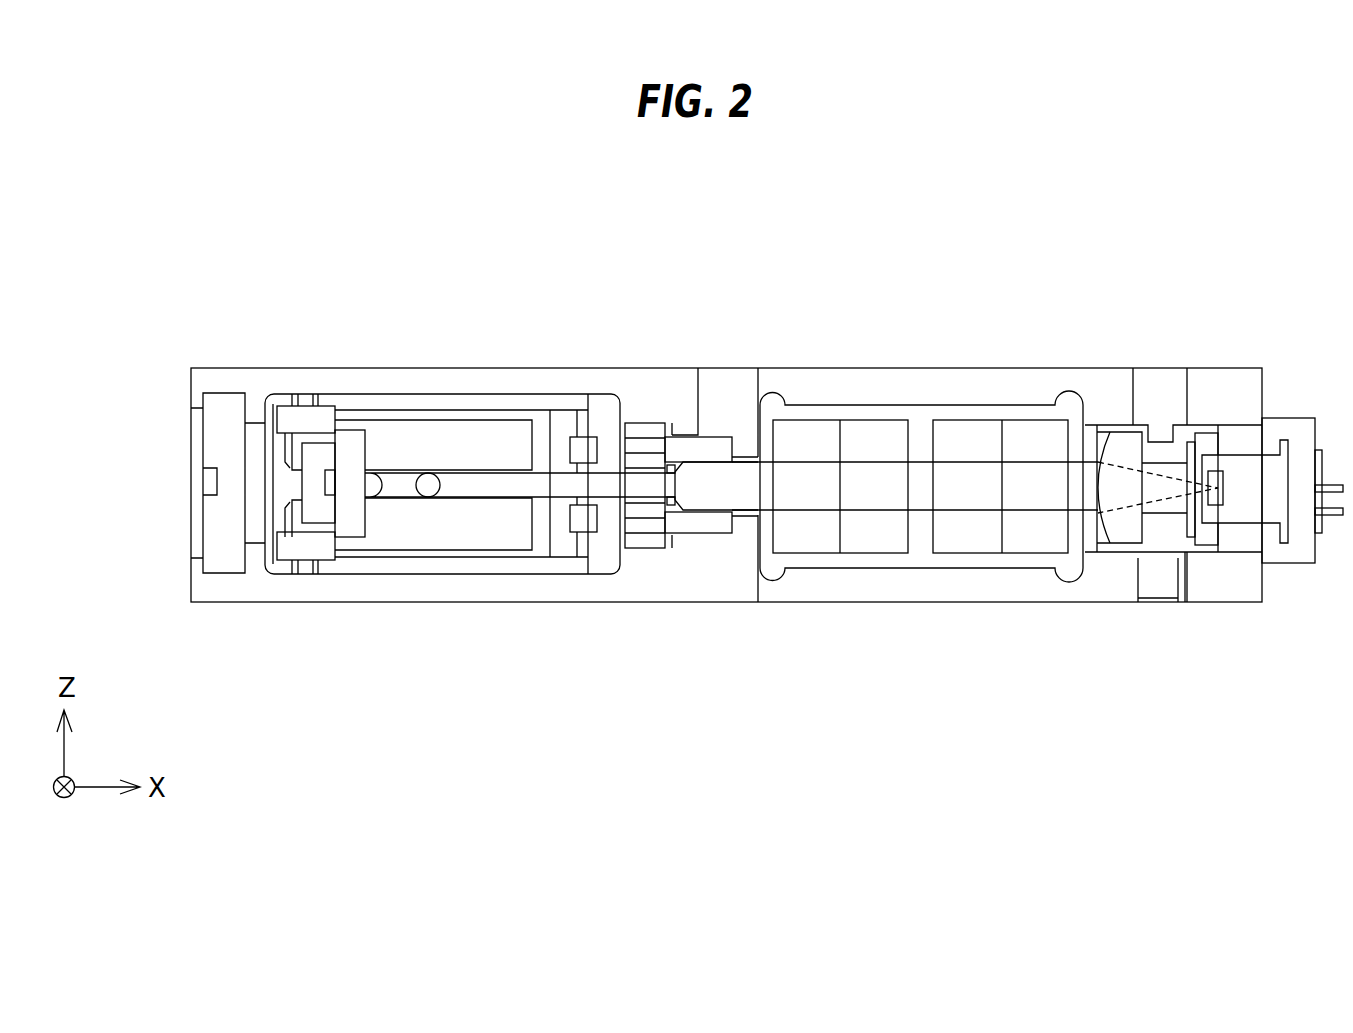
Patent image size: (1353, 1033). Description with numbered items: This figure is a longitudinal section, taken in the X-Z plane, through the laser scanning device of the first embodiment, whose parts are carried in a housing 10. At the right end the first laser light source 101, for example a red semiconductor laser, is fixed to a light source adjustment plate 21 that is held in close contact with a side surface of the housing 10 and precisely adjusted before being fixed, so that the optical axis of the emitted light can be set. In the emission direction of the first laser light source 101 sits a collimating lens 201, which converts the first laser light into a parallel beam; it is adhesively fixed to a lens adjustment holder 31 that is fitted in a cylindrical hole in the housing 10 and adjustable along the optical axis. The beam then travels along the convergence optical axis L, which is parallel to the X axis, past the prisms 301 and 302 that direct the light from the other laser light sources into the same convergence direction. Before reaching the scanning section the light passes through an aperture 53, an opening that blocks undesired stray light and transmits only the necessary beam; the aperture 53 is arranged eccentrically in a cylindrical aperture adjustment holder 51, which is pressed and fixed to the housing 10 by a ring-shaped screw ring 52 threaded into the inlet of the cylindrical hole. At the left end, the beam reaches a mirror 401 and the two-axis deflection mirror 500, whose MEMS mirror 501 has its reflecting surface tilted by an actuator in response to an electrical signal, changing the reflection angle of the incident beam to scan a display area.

The housing 10 is at (673, 388).
The light source adjustment plate 21 is at (1284, 555).
The lens adjustment holder 31 is at (1163, 535).
The aperture adjustment holder 51 is at (703, 523).
The screw ring 52 is at (648, 525).
The aperture 53 is at (668, 524).
The first laser light source 101 is at (1267, 493).
The collimating lens 201 is at (1123, 534).
The prism 301 is at (1032, 532).
The prism 302 is at (815, 532).
The mirror 401 is at (356, 503).
The two-axis deflection mirror 500 is at (395, 410).
The MEMS mirror 501 is at (432, 472).
The convergence optical axis L is at (540, 484).